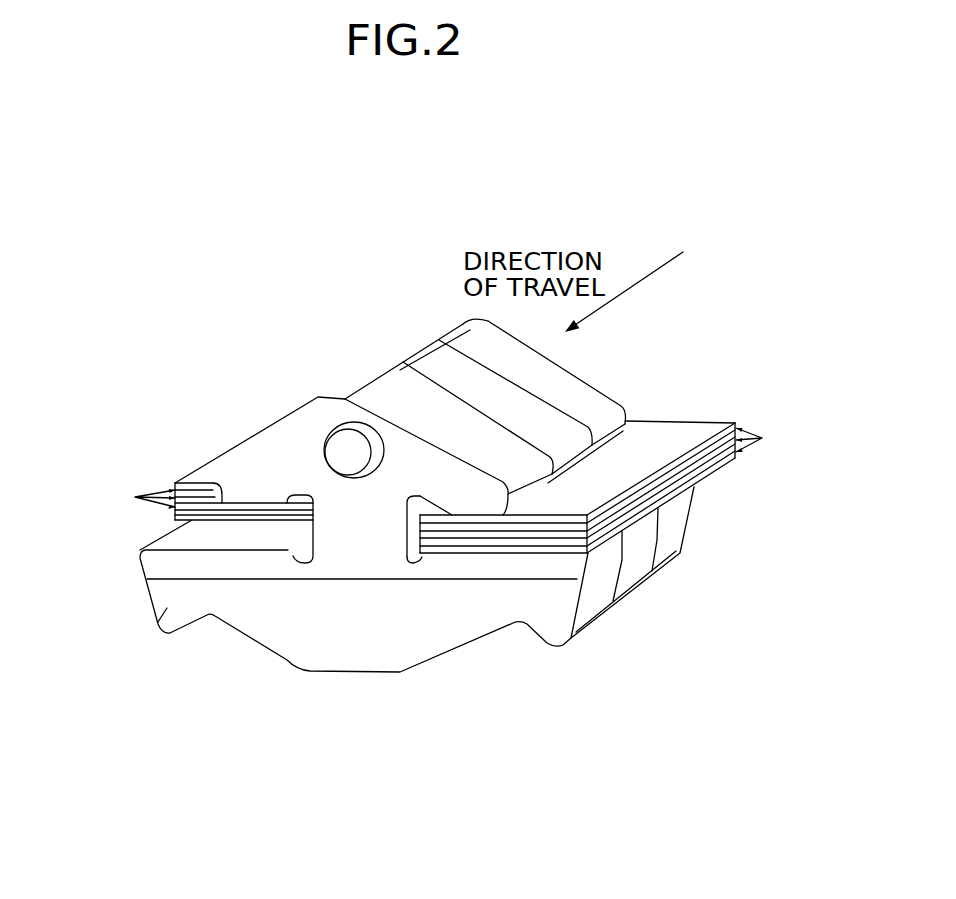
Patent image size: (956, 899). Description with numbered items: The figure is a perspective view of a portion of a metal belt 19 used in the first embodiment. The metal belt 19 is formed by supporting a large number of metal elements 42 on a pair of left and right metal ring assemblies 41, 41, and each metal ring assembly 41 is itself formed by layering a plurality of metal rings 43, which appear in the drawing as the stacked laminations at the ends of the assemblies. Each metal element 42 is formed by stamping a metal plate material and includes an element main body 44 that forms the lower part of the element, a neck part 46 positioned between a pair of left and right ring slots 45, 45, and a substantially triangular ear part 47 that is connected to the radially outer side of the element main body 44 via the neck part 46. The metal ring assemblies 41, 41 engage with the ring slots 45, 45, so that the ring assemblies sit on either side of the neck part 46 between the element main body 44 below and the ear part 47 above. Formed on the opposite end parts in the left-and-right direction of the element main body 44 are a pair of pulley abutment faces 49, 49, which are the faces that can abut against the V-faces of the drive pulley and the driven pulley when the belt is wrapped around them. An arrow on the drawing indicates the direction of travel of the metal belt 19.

The metal belt 19 is at (396, 318).
The metal ring assembly 41 is at (199, 460).
The metal element 42 is at (455, 662).
The metal ring 43 is at (450, 470).
The element main body 44 is at (158, 620).
The ring slot 45 is at (303, 542).
The neck part 46 is at (358, 552).
The ear part 47 is at (290, 457).
The pulley abutment face 49 is at (150, 602).